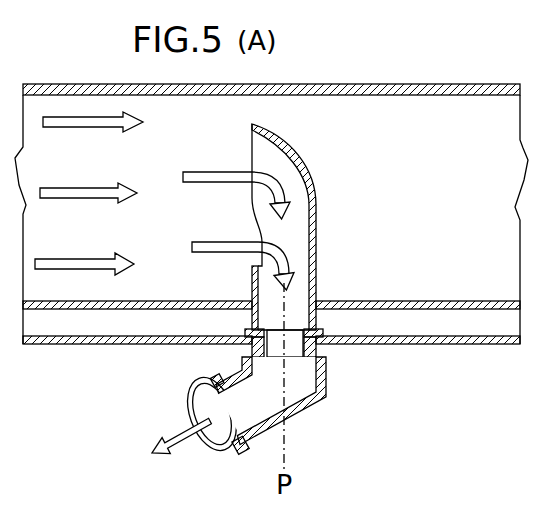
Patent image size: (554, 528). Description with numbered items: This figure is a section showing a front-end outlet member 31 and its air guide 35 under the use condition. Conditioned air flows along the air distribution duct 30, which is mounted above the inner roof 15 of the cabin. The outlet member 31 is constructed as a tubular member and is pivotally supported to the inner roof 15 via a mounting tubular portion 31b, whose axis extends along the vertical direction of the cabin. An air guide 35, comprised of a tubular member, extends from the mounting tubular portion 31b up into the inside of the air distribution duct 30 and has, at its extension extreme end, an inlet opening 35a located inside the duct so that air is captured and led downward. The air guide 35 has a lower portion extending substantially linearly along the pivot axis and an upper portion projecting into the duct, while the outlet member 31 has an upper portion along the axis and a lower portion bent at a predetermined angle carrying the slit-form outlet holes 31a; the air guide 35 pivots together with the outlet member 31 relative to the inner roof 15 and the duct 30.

The air distribution duct 30 is at (417, 84).
The inner roof 15 is at (390, 344).
The air guide 35 is at (315, 190).
The inlet opening 35a is at (258, 163).
The mounting tubular portion 31b is at (320, 330).
The outlet member 31 is at (303, 408).
The outlet holes 31a is at (190, 417).